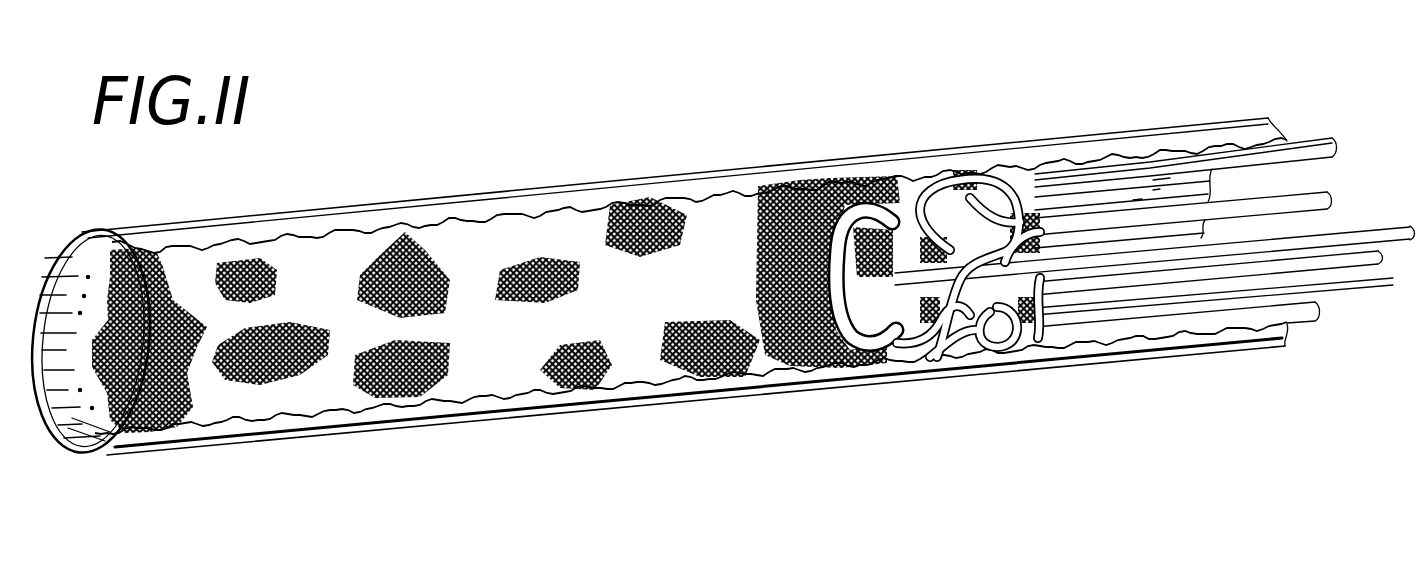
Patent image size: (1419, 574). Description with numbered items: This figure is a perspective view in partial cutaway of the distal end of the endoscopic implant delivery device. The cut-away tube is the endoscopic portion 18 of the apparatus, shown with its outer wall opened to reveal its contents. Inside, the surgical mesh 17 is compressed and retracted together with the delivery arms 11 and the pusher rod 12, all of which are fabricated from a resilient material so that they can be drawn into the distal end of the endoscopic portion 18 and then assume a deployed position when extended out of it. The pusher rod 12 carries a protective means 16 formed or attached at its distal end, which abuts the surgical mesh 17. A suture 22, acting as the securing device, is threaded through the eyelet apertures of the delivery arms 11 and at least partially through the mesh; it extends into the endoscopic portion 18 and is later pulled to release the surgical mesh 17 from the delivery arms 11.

The delivery arms 11 is at (1186, 117).
The pusher rod 12 is at (1155, 206).
The protective means 16 is at (888, 319).
The surgical mesh 17 is at (689, 278).
The endoscopic portion 18 is at (898, 222).
The suture 22 is at (1214, 321).